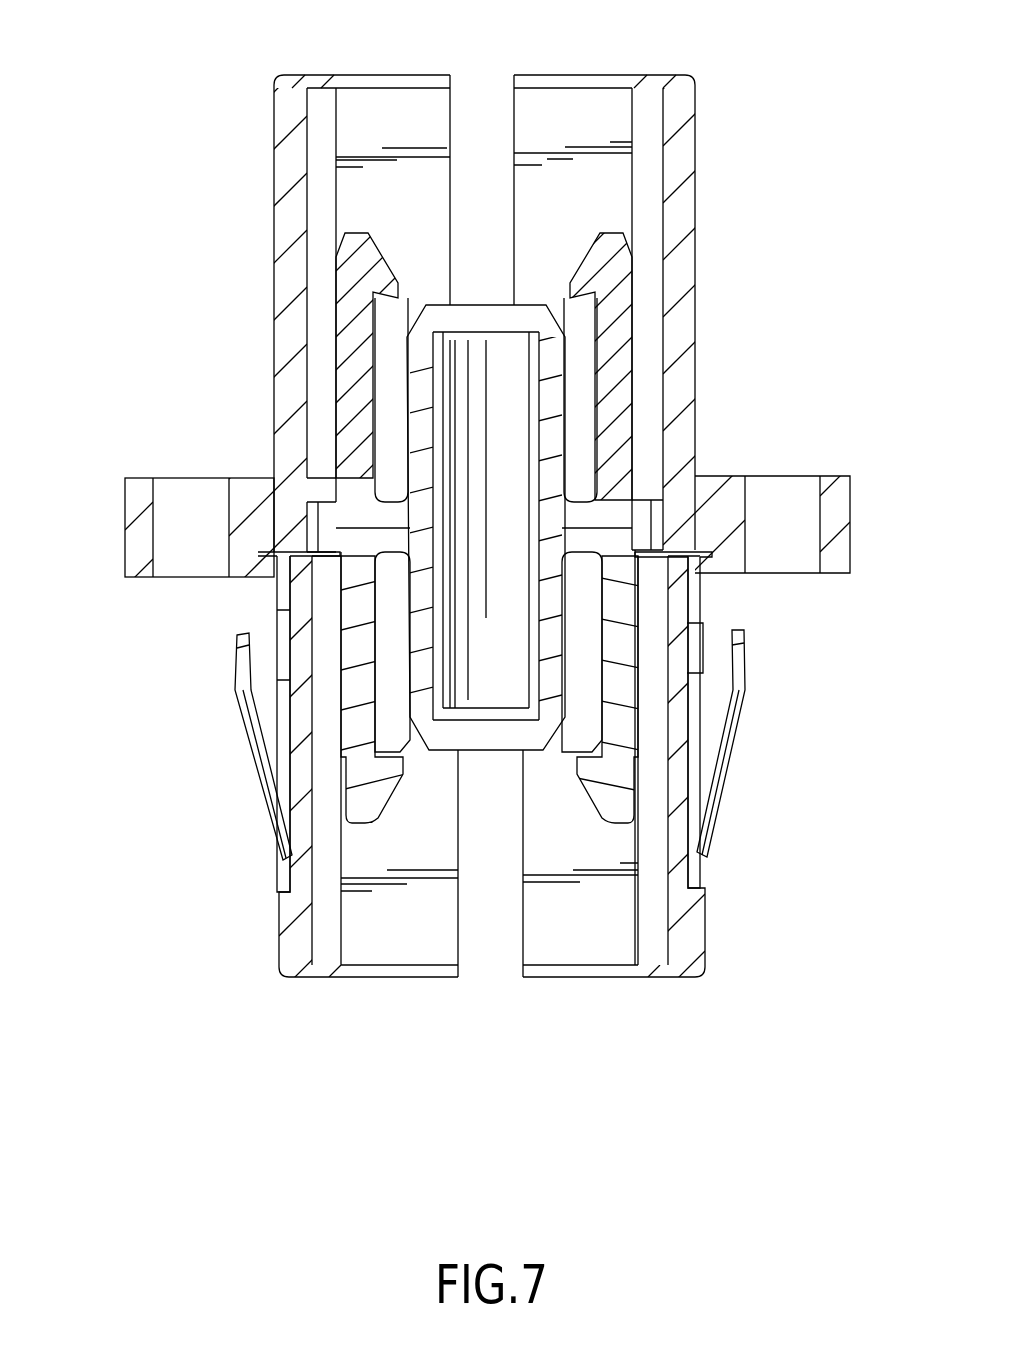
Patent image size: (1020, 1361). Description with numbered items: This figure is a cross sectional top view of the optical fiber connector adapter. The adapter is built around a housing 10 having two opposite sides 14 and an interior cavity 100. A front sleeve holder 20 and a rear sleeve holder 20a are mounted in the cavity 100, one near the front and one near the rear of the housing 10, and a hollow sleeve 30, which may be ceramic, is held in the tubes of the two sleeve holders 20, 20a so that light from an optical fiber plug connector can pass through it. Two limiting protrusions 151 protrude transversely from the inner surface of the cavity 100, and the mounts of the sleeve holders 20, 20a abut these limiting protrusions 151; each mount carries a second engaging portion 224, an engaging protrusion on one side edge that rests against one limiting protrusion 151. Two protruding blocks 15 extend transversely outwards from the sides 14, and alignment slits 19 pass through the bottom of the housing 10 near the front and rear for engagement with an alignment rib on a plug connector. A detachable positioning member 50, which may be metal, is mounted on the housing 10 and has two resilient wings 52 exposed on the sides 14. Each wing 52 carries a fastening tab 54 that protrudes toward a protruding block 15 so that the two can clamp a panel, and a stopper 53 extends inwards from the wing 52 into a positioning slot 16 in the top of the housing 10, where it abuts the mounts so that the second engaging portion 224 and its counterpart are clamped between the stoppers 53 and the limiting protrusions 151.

The housing 10 is at (720, 970).
The sides 14 is at (696, 112).
The protruding blocks 15 is at (140, 551).
The positioning slots 16 is at (700, 552).
The alignment slits 19 is at (488, 963).
The front sleeve holder 20 is at (603, 835).
The rear sleeve holder 20a is at (420, 292).
The sleeve 30 is at (441, 348).
The detachable positioning member 50 is at (510, 646).
The wings 52 is at (700, 592).
The stoppers 53 is at (308, 552).
The fastening tab 54 is at (730, 715).
The cavity 100 is at (369, 960).
The limiting protrusions 151 is at (336, 382).
The second engaging portion 224 is at (337, 548).